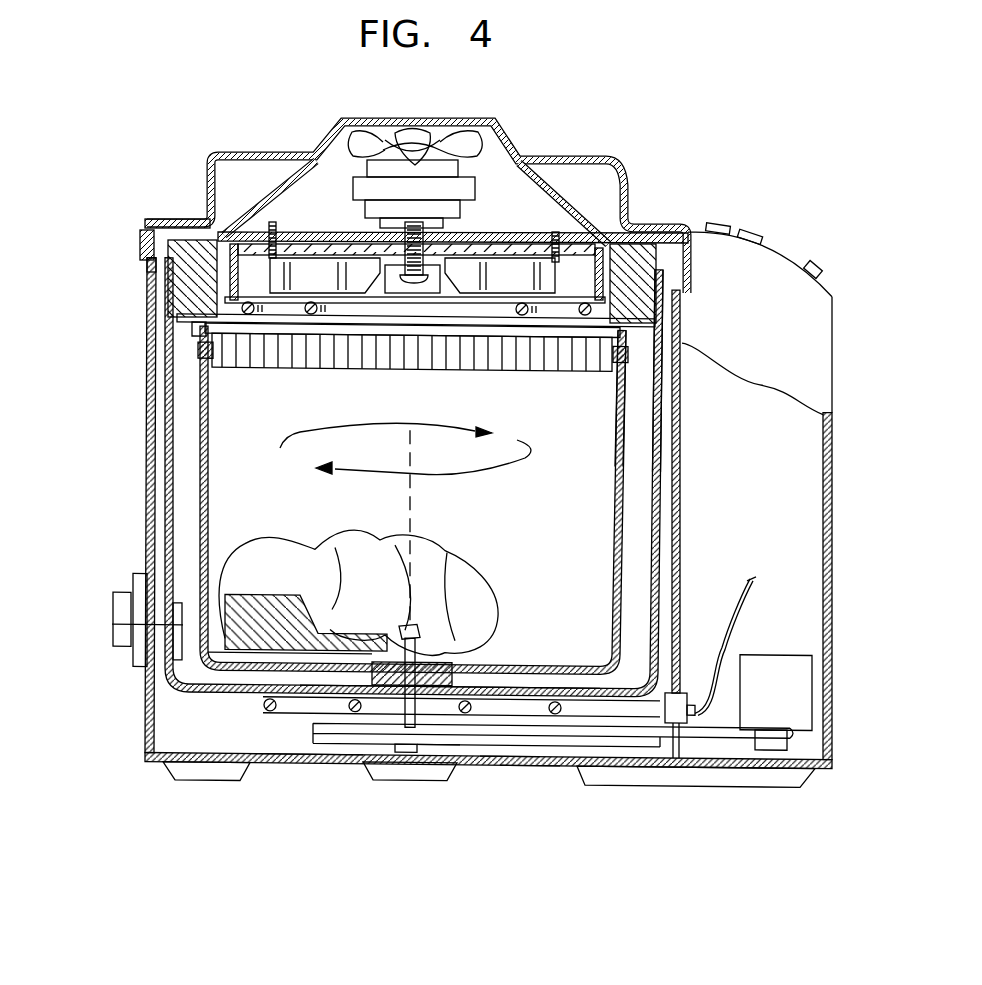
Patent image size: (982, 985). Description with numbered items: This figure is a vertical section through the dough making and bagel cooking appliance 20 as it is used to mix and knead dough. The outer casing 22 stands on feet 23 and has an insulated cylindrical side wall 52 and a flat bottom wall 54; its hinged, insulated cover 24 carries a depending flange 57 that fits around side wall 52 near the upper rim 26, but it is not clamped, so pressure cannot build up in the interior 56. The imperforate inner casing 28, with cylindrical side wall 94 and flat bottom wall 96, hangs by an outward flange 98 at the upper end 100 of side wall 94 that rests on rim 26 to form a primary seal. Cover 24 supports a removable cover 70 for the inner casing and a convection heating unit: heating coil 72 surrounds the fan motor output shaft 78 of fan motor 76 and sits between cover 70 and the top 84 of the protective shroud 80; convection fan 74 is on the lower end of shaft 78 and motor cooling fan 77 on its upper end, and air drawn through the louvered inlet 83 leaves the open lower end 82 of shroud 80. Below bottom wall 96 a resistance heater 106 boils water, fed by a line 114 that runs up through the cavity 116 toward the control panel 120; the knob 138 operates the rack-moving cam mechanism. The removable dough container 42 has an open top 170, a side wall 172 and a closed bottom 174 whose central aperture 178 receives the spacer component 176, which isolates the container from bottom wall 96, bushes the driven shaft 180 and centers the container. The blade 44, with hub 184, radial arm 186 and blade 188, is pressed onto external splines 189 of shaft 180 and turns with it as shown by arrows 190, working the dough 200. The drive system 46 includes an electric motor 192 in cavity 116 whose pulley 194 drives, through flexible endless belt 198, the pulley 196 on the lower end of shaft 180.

The dough making and bagel cooking appliance 20 is at (232, 122).
The outer casing 22 is at (133, 355).
The feet 23 is at (197, 783).
The cover 24 is at (568, 150).
The upper rim 26 is at (141, 257).
The inner casing 28 is at (684, 484).
The dough container 42 is at (185, 432).
The blade 44 is at (343, 545).
The electrical drive system 46 is at (521, 770).
The side wall 52 is at (146, 475).
The bottom wall 54 is at (288, 760).
The interior 56 is at (670, 560).
The flange 57 is at (141, 265).
The removable cover 70 is at (166, 222).
The heating coil 72 is at (311, 302).
The convection fan 74 is at (570, 278).
The fan motor 76 is at (480, 197).
The motor cooling fan 77 is at (437, 130).
The fan motor output shaft 78 is at (398, 130).
The protective shroud 80 is at (645, 282).
The open lower end 82 is at (548, 303).
The louvered inlet 83 is at (210, 183).
The top of fan shroud 84 is at (293, 240).
The cylindrical side wall 94 is at (668, 594).
The bottom wall 96 is at (594, 689).
The flange 98 is at (680, 279).
The upper end 100 is at (150, 235).
The resistance heater 106 is at (263, 705).
The line 114 is at (724, 617).
The cavity 116 is at (797, 563).
The control panel 120 is at (833, 296).
The knob 138 is at (113, 617).
The open top 170 is at (420, 330).
The side wall 172 is at (627, 427).
The closed bottom 174 is at (498, 766).
The spacer component 176 is at (447, 658).
The aperture 178 is at (373, 773).
The driven shaft 180 is at (432, 772).
The hub 184 is at (441, 565).
The arm 186 is at (326, 603).
The blade 188 is at (227, 635).
The external splines 189 is at (447, 598).
The arrows 190 is at (285, 445).
The electric motor 192 is at (808, 692).
The pulley 194 is at (783, 750).
The pulley 196 is at (302, 757).
The flexible endless belt 198 is at (640, 745).
The dough 200 is at (377, 556).